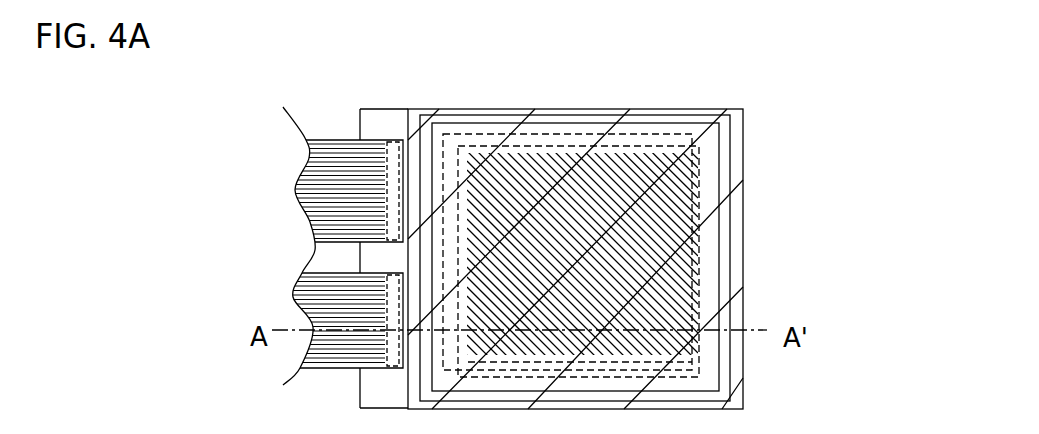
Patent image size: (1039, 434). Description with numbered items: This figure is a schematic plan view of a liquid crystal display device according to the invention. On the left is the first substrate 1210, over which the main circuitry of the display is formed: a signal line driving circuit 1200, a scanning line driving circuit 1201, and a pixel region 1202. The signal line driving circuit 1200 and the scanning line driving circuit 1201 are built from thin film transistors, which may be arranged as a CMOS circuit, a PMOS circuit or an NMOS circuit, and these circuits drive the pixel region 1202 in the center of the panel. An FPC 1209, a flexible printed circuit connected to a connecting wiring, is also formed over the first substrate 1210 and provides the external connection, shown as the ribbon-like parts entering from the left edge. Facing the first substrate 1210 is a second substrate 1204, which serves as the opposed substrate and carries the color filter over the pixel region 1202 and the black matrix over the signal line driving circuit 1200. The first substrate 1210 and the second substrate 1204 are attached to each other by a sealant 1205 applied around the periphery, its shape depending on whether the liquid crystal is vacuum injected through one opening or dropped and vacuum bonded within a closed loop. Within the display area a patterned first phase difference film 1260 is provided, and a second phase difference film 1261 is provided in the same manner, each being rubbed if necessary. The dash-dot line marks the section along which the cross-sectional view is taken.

The signal line driving circuit 1200 is at (472, 129).
The scanning line driving circuit 1201 is at (695, 140).
The pixel region 1202 is at (688, 250).
The second substrate 1204 is at (416, 122).
The sealant 1205 is at (731, 160).
The FPC 1209 is at (325, 366).
The first substrate 1210 is at (388, 124).
The first phase difference film 1260 is at (824, 273).
The second phase difference film 1261 is at (682, 217).